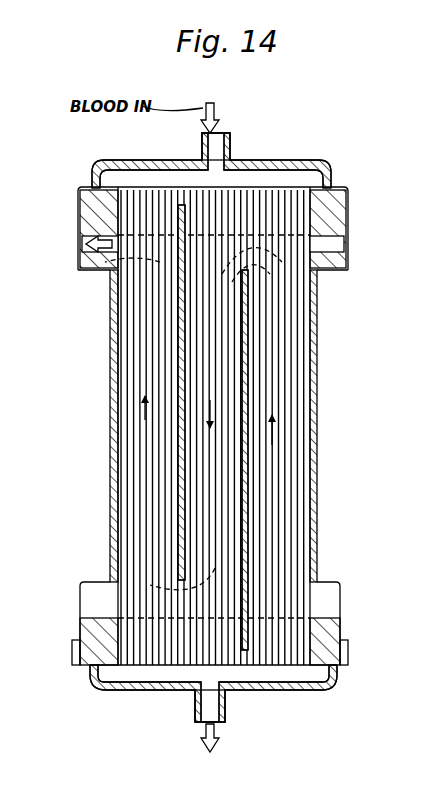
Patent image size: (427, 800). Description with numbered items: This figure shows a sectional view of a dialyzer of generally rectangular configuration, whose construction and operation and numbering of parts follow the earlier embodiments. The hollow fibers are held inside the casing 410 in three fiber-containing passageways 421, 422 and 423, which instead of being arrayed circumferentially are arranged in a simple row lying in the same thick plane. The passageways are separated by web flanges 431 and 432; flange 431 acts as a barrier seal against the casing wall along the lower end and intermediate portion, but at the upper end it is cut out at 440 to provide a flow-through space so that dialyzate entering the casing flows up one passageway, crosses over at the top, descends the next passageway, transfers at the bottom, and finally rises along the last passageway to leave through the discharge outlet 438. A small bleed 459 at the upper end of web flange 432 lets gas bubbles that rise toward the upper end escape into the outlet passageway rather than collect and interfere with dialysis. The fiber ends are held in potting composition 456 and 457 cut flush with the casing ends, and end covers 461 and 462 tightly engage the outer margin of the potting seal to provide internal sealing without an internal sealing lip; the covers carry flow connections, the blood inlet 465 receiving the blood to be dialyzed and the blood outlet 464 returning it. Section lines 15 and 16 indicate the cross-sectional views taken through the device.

The casing 410 is at (322, 382).
The fiber-containing passageway 421 is at (283, 512).
The fiber-containing passageway 422 is at (214, 512).
The fiber-containing passageway 423 is at (150, 512).
The flange 431 is at (249, 345).
The web flange 432 is at (185, 342).
The discharge outlet 438 is at (101, 265).
The cut-out 440 is at (223, 440).
The potting composition 456 is at (340, 626).
The potting composition 457 is at (343, 231).
The bleed 459 is at (185, 252).
The cover 461 is at (286, 693).
The end cover 462 is at (300, 164).
The flow connection 464 is at (197, 712).
The flow connection 465 is at (232, 146).
The section line 15 is at (73, 400).
The section line 16 is at (47, 215).